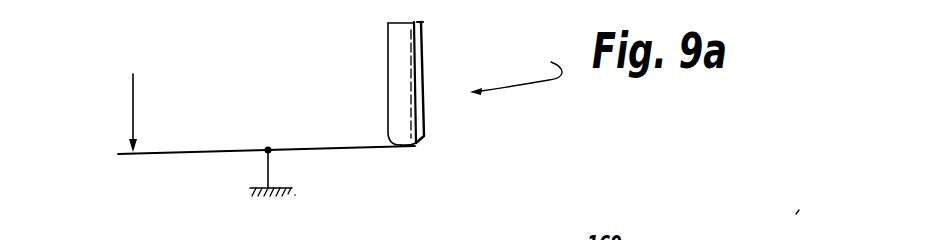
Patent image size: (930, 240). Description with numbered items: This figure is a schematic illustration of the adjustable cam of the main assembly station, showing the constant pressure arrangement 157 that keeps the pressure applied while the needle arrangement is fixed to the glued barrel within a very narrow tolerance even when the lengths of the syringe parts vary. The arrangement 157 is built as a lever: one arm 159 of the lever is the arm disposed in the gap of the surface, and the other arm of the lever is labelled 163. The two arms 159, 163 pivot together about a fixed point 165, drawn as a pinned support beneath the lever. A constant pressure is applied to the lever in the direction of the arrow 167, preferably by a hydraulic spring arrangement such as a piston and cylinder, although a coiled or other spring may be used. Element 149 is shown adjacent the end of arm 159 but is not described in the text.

The stylus 149 is at (407, 68).
The constant pressure arrangement 157 is at (516, 73).
The arm 159 is at (417, 144).
The other arm of the lever 163 is at (192, 156).
The fixed point 165 is at (270, 151).
The arrow 167 is at (133, 102).